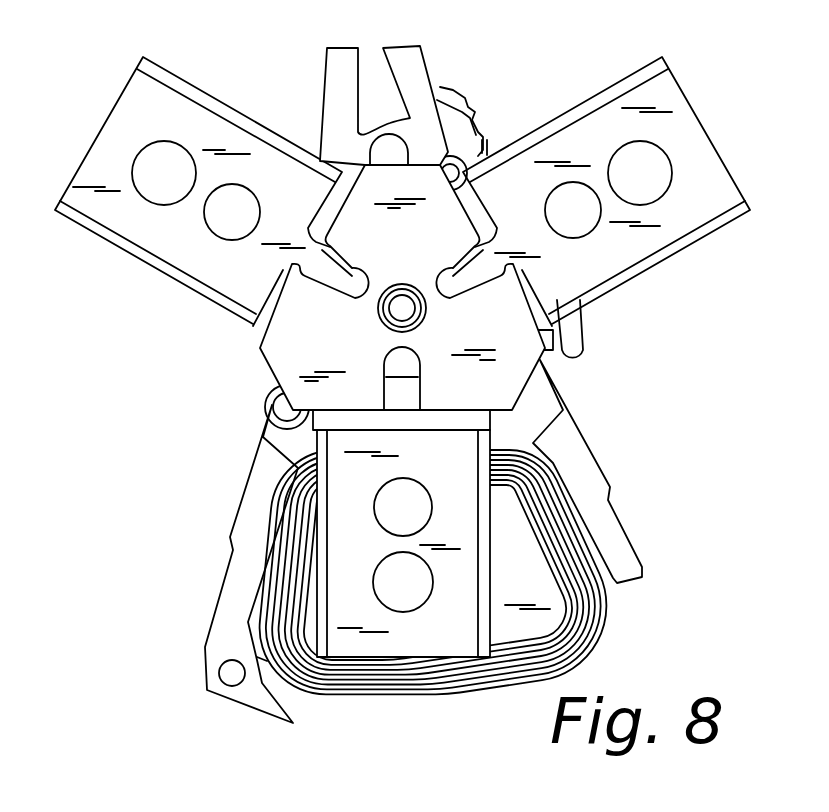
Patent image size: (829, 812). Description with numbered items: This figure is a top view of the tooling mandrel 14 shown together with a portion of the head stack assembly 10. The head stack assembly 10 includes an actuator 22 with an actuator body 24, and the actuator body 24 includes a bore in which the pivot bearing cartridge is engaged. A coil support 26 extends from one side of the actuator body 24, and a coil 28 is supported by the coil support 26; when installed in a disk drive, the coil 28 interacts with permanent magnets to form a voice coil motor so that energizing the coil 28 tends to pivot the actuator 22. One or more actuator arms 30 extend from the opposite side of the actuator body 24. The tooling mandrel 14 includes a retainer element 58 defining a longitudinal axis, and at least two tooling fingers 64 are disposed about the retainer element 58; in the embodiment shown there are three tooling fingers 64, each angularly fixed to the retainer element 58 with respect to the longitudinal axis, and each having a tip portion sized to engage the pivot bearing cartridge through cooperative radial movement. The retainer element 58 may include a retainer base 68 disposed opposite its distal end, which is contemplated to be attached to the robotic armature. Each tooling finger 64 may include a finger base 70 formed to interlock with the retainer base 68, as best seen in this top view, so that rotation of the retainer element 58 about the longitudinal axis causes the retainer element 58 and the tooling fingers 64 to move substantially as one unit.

The head stack assembly 10 is at (152, 532).
The tooling mandrel 14 is at (390, 272).
The actuator 22 is at (440, 147).
The actuator body 24 is at (432, 130).
The coil support 26 is at (592, 468).
The coil 28 is at (367, 690).
The actuator arm 30 is at (343, 54).
The retainer element 58 is at (308, 390).
The tooling finger 64 is at (108, 138).
The retainer base 68 is at (298, 323).
The finger base 70 is at (220, 263).